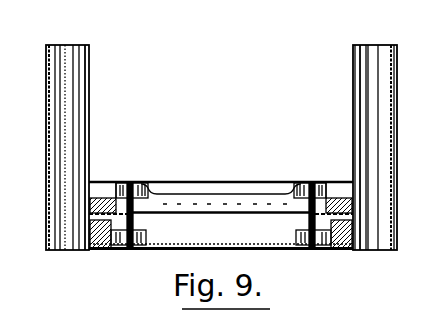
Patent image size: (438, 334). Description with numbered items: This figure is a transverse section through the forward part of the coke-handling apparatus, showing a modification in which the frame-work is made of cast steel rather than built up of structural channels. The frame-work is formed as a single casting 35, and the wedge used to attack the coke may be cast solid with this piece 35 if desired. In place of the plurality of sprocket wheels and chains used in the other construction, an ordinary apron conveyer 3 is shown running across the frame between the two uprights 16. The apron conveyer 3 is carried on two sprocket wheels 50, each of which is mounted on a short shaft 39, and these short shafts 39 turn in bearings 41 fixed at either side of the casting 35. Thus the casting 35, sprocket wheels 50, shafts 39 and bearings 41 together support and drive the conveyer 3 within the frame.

The upright posts 16 is at (63, 52).
The apron conveyer 3 is at (228, 184).
The single casting 35 is at (230, 203).
The bearings 41 is at (88, 194).
The short shafts 39 is at (89, 229).
The sprocket wheels 50 is at (139, 206).